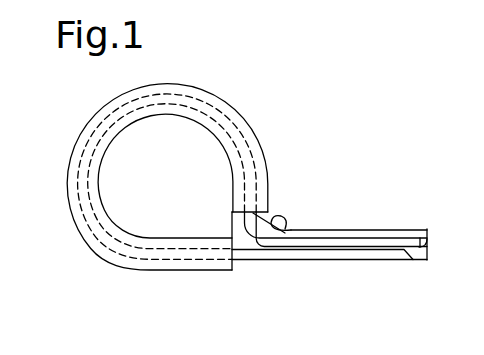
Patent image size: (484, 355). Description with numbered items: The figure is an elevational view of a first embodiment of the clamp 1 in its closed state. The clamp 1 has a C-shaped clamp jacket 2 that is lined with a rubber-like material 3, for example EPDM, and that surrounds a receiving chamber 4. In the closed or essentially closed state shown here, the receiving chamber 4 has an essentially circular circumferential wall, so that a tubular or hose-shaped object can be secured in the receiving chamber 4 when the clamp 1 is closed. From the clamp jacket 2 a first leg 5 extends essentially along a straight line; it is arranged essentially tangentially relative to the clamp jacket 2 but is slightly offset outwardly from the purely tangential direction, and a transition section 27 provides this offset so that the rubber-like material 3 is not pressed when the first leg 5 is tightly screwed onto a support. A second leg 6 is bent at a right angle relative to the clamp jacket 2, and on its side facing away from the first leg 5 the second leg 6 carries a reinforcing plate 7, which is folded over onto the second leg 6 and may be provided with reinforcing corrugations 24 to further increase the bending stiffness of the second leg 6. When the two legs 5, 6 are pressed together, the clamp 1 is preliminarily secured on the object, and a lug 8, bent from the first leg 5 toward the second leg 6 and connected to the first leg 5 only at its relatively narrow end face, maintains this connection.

The clamp 1 is at (318, 139).
The clamp jacket 2 is at (219, 116).
The rubber-like material 3 is at (250, 208).
The receiving chamber 4 is at (199, 165).
The first leg 5 is at (377, 260).
The second leg 6 is at (373, 240).
The reinforcing plate 7 is at (303, 230).
The lug 8 is at (434, 232).
The reinforcing corrugations 24 is at (290, 232).
The transition section 27 is at (255, 262).